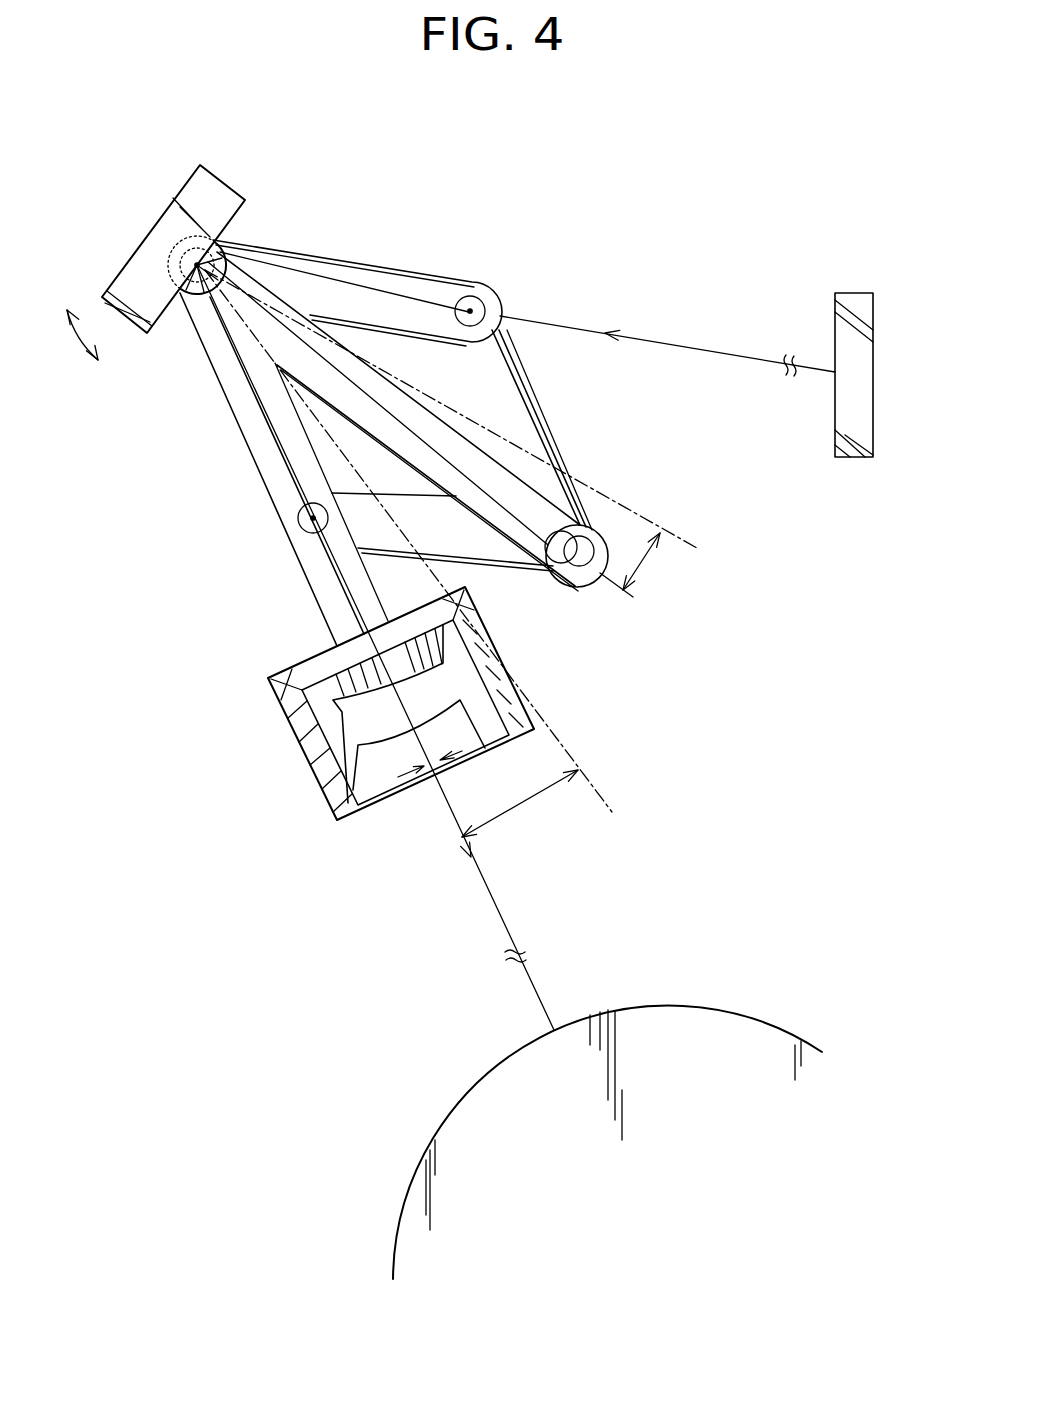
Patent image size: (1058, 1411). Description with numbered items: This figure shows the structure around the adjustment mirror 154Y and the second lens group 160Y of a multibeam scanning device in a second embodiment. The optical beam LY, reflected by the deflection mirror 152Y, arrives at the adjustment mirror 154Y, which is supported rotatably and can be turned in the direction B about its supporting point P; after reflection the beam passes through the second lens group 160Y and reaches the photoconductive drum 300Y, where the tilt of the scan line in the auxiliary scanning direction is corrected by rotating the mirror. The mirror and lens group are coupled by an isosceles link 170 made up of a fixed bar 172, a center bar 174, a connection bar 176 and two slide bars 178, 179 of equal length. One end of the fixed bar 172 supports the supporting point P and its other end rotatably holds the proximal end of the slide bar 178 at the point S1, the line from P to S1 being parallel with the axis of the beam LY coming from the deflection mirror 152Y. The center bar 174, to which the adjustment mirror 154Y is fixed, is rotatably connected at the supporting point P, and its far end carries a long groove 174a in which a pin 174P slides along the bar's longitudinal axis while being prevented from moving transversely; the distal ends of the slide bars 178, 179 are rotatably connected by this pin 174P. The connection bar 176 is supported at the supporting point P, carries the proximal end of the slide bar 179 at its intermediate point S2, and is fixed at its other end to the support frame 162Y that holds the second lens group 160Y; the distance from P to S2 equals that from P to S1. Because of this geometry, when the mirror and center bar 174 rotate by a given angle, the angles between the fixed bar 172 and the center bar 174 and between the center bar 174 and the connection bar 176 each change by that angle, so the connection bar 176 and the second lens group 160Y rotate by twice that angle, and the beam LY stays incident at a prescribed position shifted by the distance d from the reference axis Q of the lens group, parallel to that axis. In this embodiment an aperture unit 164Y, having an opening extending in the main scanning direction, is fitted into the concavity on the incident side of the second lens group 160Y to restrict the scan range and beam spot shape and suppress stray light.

The adjustment mirror 154Y is at (180, 198).
The deflection mirror 152Y is at (865, 300).
The optical beam LY is at (750, 355).
The isosceles link 170 is at (445, 250).
The fixed bar 172 is at (365, 272).
The center bar 174 is at (507, 482).
The pin 174P is at (575, 537).
The long groove 174a is at (582, 587).
The connection bar 176 is at (270, 470).
The slide bar 178 is at (513, 397).
The slide bar 179 is at (457, 542).
The point S1 is at (470, 312).
The intermediate point S2 is at (313, 518).
The supporting point P is at (190, 295).
The direction B is at (76, 337).
The second lens group 160Y is at (361, 731).
The support frame 162Y is at (310, 750).
The aperture unit 164Y is at (302, 686).
The reference axis Q is at (432, 737).
The prescribed distance (eccentricity) d is at (435, 767).
The photoconductive drum 300Y is at (688, 1005).